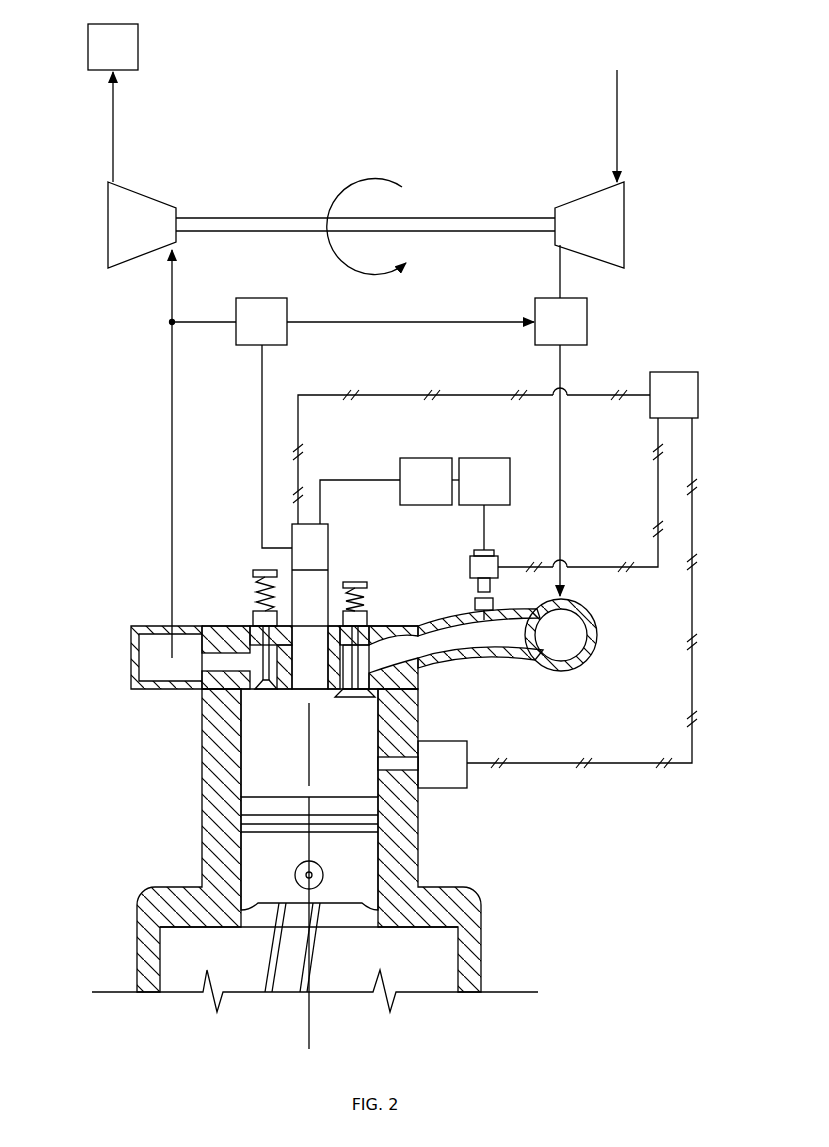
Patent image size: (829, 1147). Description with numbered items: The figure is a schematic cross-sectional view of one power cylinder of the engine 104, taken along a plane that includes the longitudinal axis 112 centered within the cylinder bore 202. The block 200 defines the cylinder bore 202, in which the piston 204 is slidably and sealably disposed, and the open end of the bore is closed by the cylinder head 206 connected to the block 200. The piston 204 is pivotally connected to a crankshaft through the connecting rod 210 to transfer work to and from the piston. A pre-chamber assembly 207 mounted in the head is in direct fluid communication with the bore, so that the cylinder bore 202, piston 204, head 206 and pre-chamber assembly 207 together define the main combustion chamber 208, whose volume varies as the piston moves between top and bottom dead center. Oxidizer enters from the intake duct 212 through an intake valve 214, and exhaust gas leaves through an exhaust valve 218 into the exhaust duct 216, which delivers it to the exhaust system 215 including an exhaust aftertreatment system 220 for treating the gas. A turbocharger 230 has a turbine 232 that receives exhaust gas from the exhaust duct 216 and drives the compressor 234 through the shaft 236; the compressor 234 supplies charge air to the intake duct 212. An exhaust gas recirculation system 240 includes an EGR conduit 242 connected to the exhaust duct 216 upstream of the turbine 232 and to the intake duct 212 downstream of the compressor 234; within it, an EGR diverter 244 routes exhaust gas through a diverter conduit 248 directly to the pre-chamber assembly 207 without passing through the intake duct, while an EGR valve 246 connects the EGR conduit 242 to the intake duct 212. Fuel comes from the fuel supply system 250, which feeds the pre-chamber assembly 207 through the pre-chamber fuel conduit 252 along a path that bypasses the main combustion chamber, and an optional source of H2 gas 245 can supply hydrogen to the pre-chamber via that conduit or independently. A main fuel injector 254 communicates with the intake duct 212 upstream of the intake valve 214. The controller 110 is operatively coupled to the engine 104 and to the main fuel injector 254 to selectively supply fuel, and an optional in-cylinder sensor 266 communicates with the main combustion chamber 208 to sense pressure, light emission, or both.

The engine 104 is at (644, 35).
The controller 110 is at (663, 402).
The longitudinal axis 112 is at (312, 1034).
The block 200 is at (202, 843).
The cylinder bore 202 is at (241, 762).
The piston 204 is at (340, 864).
The cylinder head 206 is at (418, 683).
The pre-chamber assembly 207 is at (342, 560).
The main combustion chamber 208 is at (336, 739).
The connecting rod 210 is at (322, 948).
The intake duct 212 is at (592, 660).
The intake valve 214 is at (385, 630).
The exhaust system 215 is at (56, 210).
The exhaust duct 216 is at (114, 113).
The exhaust valve 218 is at (252, 638).
The exhaust aftertreatment system 220 is at (102, 55).
The turbocharger 230 is at (346, 121).
The turbine 232 is at (127, 236).
The compressor 234 is at (583, 236).
The shaft 236 is at (478, 218).
The exhaust gas recirculation system 240 is at (424, 297).
The EGR conduit 242 is at (357, 322).
The EGR diverter 244 is at (250, 328).
The source of H2 gas 245 is at (426, 481).
The EGR valve 246 is at (549, 328).
The diverter conduit 248 is at (262, 413).
The fuel supply system 250 is at (496, 489).
The pre-chamber fuel conduit 252 is at (384, 479).
The main fuel injector 254 is at (470, 567).
The in-cylinder sensor 266 is at (454, 771).